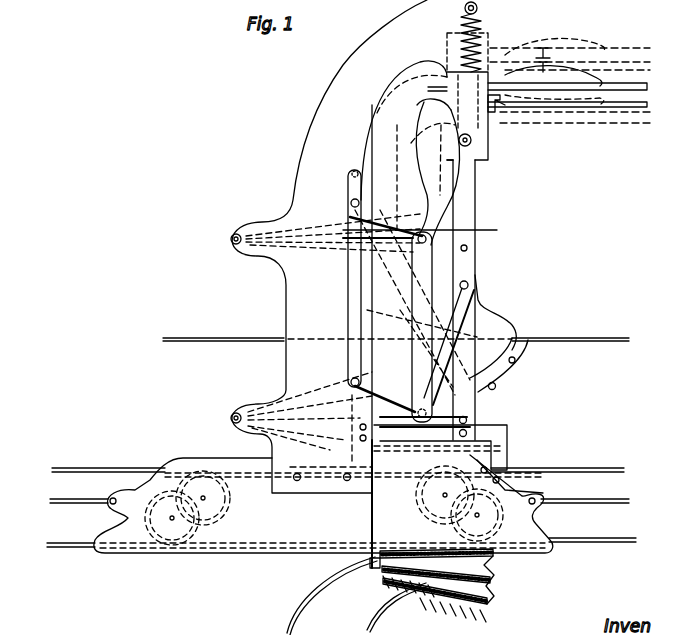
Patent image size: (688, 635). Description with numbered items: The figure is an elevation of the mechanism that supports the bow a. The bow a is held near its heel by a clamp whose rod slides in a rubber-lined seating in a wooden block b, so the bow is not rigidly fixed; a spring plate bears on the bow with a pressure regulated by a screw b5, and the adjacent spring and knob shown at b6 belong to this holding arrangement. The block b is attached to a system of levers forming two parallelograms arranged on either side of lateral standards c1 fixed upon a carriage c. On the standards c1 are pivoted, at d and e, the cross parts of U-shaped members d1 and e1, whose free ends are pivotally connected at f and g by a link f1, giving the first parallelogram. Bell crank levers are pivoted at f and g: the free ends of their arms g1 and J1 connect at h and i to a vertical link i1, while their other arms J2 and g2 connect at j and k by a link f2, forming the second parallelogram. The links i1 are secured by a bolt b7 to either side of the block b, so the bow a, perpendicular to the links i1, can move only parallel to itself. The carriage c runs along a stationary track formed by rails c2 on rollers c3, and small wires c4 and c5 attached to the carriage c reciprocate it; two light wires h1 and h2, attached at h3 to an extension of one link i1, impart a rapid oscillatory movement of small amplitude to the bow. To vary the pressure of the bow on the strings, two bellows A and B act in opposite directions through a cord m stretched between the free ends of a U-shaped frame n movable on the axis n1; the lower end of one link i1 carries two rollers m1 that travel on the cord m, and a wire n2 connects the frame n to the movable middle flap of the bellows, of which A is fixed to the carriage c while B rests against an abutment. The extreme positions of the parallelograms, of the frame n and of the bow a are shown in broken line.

The bow a is at (568, 86).
The wooden block b is at (447, 78).
The screw b5 is at (513, 65).
The coil spring and knob b6 is at (478, 36).
The bolt b7 is at (472, 142).
The carriage c is at (323, 504).
The lateral standards c1 is at (300, 297).
The rails c2 is at (85, 468).
The rollers c3 is at (178, 492).
The small wire c4 is at (76, 491).
The small wire c5 is at (585, 491).
The pivot d is at (237, 232).
The U-shaped member d1 is at (313, 250).
The pivot e is at (230, 417).
The U-shaped member e1 is at (304, 438).
The pivot f is at (470, 214).
The link f1 is at (414, 294).
The link f2 is at (350, 302).
The pivot g is at (492, 383).
The arm g1 is at (460, 272).
The arm g2 is at (410, 345).
The pivot h is at (476, 282).
The light wire h1 is at (586, 337).
The light wire h2 is at (203, 336).
The attachment point h3 is at (522, 298).
The pivot i is at (486, 110).
The vertical link i1 is at (392, 98).
The pivot j is at (351, 203).
The arm J1 is at (424, 102).
The arm J2 is at (350, 190).
The pivot k is at (348, 378).
The cord m is at (470, 405).
The rollers m1 is at (458, 440).
The U-shaped frame n is at (440, 447).
The axis n1 is at (352, 437).
The wire n2 is at (371, 516).
The bellows A is at (493, 575).
The bellows B is at (483, 595).